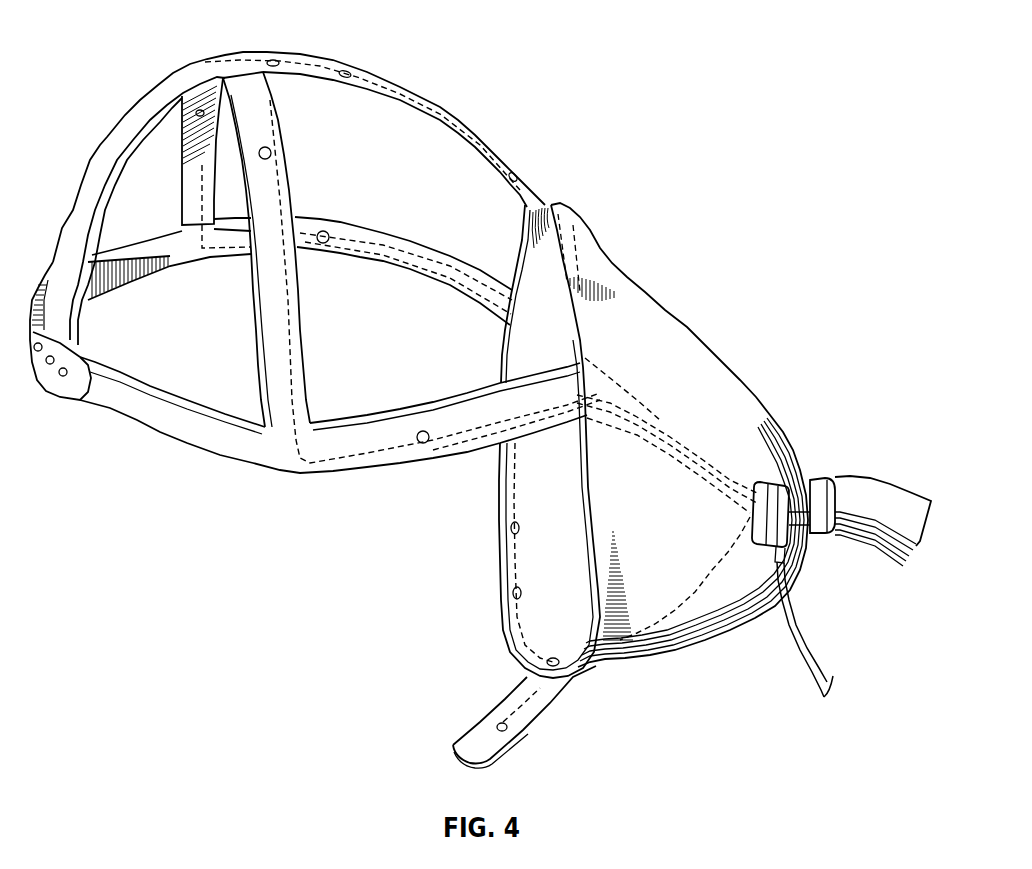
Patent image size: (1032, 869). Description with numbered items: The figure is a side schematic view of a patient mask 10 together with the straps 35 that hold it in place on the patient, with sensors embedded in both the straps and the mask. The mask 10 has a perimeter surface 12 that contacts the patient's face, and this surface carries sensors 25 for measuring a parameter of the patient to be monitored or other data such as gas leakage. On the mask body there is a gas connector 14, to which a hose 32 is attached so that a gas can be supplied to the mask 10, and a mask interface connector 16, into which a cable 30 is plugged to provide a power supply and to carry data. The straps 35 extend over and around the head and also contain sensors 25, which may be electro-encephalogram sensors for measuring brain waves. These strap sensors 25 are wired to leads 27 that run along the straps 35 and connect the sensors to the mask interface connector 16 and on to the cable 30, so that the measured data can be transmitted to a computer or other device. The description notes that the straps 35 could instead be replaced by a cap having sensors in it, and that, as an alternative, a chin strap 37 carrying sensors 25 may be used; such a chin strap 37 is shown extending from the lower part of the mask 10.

The mask 10 is at (762, 731).
The perimeter surface 12 is at (516, 496).
The gas connector 14 is at (813, 480).
The mask interface connector 16 is at (770, 480).
The sensor 25 is at (268, 60).
The leads 27 is at (313, 70).
The cable 30 is at (795, 630).
The hose 32 is at (870, 477).
The straps 35 is at (440, 107).
The chin strap 37 is at (522, 738).